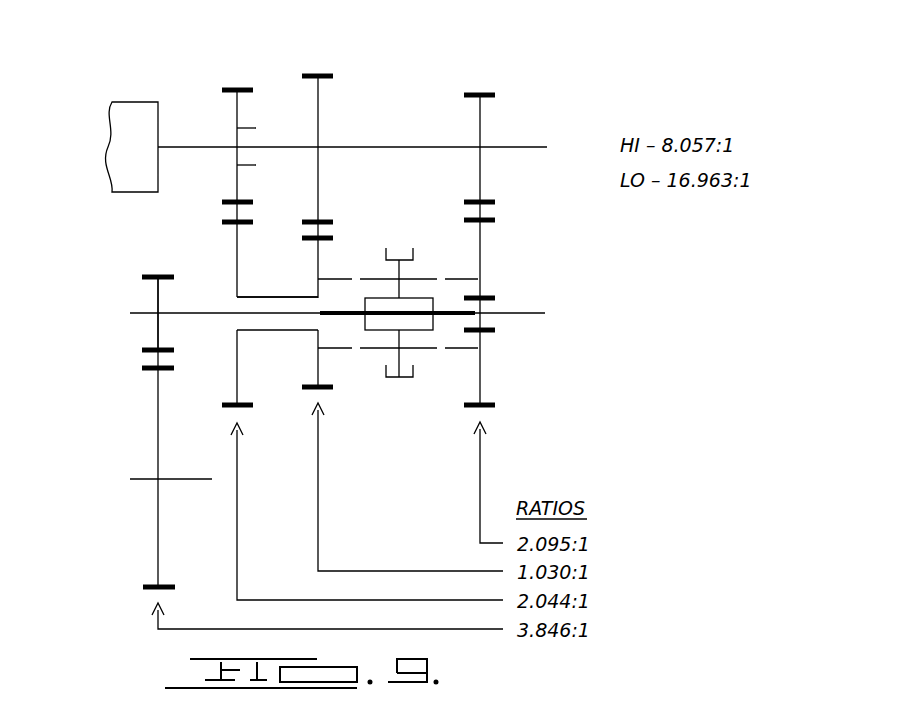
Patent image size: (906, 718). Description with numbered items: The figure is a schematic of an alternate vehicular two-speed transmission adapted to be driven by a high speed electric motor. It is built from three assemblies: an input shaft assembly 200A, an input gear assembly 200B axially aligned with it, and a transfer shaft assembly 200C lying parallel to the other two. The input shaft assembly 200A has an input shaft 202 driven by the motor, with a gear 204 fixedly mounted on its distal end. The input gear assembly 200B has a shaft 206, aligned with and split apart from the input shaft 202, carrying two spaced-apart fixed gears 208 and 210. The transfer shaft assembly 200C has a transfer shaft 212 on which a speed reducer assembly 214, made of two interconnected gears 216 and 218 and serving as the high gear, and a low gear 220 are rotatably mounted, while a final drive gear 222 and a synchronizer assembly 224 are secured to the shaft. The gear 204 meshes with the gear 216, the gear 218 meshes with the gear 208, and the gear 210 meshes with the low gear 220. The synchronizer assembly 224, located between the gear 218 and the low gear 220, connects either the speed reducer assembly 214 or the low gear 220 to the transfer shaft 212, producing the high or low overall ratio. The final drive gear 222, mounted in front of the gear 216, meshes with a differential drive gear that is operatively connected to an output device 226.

The input shaft assembly 200A is at (162, 100).
The input gear assembly 200B is at (290, 62).
The transfer shaft assembly 200C is at (128, 266).
The input shaft 202 is at (195, 145).
The gear 204 is at (237, 87).
The shaft 206 is at (385, 145).
The gear 208 is at (333, 75).
The gear 210 is at (483, 93).
The transfer shaft 212 is at (196, 311).
The speed reducer assembly 214 is at (266, 295).
The gear 216 is at (222, 221).
The gear 218 is at (333, 239).
The low gear 220 is at (495, 220).
The final drive gear 222 is at (165, 275).
The synchronizer assembly 224 is at (408, 246).
The output device 226 is at (179, 478).